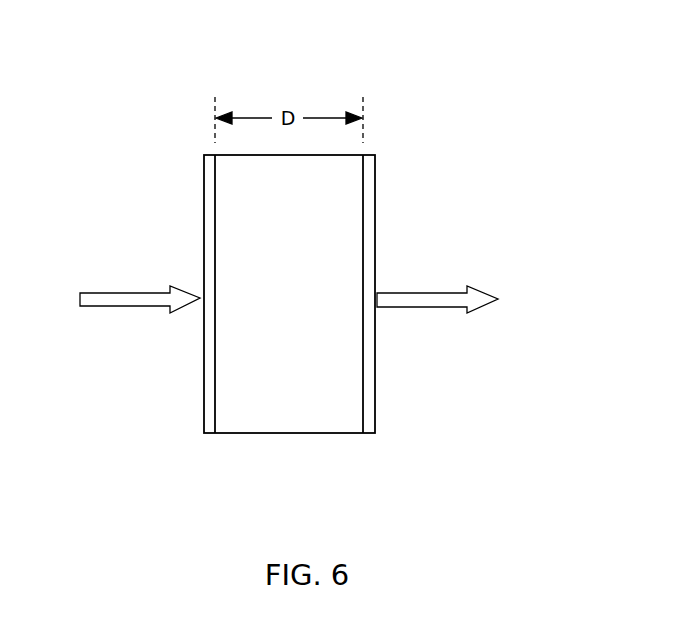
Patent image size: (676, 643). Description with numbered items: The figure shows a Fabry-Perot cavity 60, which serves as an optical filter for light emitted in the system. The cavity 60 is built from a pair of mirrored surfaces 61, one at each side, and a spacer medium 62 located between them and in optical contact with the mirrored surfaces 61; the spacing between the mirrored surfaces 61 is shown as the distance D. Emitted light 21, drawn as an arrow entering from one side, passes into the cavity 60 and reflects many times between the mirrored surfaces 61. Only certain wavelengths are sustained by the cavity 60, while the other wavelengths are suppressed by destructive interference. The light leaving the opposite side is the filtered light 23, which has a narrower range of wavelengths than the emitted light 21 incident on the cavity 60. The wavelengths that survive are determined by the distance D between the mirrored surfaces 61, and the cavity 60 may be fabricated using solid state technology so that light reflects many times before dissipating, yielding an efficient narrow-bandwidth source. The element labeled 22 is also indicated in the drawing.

The Fabry-Perot cavity 60 is at (162, 92).
The filter 22 is at (410, 95).
The emitted light 21 is at (130, 300).
The filtered light 23 is at (440, 298).
The mirrored surfaces 61 is at (210, 412).
The spacer medium 62 is at (296, 410).